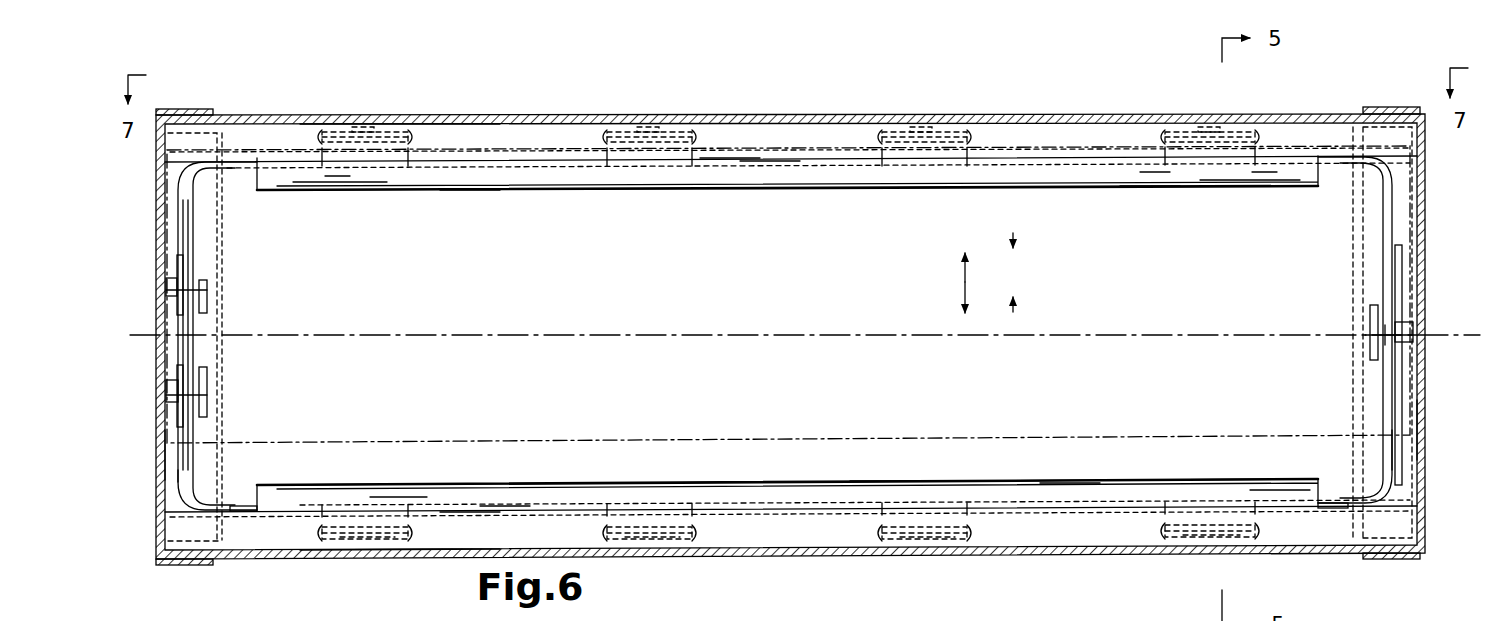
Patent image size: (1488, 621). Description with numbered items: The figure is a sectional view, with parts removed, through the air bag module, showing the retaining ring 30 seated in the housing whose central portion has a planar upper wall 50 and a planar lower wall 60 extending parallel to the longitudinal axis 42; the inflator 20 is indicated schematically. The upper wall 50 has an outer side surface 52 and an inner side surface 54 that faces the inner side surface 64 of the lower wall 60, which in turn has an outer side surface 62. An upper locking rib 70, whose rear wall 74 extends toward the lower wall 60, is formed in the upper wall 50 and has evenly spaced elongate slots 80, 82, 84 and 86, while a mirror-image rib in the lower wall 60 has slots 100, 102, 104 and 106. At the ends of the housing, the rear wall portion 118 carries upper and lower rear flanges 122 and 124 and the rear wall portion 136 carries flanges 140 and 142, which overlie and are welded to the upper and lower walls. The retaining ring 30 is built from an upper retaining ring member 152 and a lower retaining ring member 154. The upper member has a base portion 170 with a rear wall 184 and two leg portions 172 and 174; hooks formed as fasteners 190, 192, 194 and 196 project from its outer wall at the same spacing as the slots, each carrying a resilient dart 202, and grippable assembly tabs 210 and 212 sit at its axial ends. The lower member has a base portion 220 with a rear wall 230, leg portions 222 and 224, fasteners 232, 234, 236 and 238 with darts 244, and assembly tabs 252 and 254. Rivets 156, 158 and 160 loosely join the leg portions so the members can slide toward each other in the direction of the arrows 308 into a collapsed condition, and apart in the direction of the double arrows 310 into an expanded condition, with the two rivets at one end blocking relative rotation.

The inflator 20 is at (632, 452).
The air bag retaining ring 30 is at (560, 194).
The axis 42 is at (800, 332).
The upper wall 50 is at (460, 108).
The outer side surface 52 is at (475, 165).
The inner side surface 54 is at (470, 190).
The lower wall 60 is at (468, 538).
The outer side surface 62 is at (478, 553).
The inner side surface 64 is at (505, 540).
The upper locking rib 70 is at (770, 164).
The rear wall 74 is at (732, 133).
The elongate slot 80 is at (403, 130).
The elongate slot 82 is at (680, 132).
The elongate slot 84 is at (968, 130).
The elongate slot 86 is at (1243, 125).
The slot 100 is at (395, 545).
The slot 102 is at (690, 545).
The slot 104 is at (940, 545).
The slot 106 is at (1230, 543).
The rear wall portion 118 is at (160, 455).
The upper rear flange 122 is at (183, 113).
The lower rear flange 124 is at (190, 565).
The rear wall portion 136 is at (1425, 432).
The upper rear flange 140 is at (1387, 106).
The lower rear flange 142 is at (1385, 560).
The upper retaining ring member 152 is at (983, 199).
The lower retaining ring member 154 is at (878, 466).
The rivet 156 is at (1372, 340).
The rivet 158 is at (210, 293).
The rivet 160 is at (210, 395).
The base portion 170 is at (1150, 185).
The leg portion 172 is at (1385, 215).
The leg portion 174 is at (170, 248).
The rear wall 184 is at (1155, 172).
The fastener 190 is at (320, 148).
The fastener 192 is at (604, 155).
The fastener 194 is at (878, 148).
The fastener 196 is at (1160, 147).
The dart 202 is at (350, 131).
The grippable assembly tab 210 is at (243, 165).
The grippable assembly tab 212 is at (1335, 160).
The base portion 220 is at (930, 483).
The leg portion 222 is at (1393, 450).
The leg portion 224 is at (182, 488).
The rear wall 230 is at (1070, 485).
The fastener 232 is at (320, 525).
The fastener 234 is at (612, 510).
The fastener 236 is at (880, 530).
The fastener 238 is at (1158, 520).
The dart 244 is at (350, 546).
The grippable assembly tab 252 is at (238, 507).
The grippable assembly tab 254 is at (1340, 512).
The arrows 308 is at (1047, 272).
The double arrows 310 is at (930, 281).